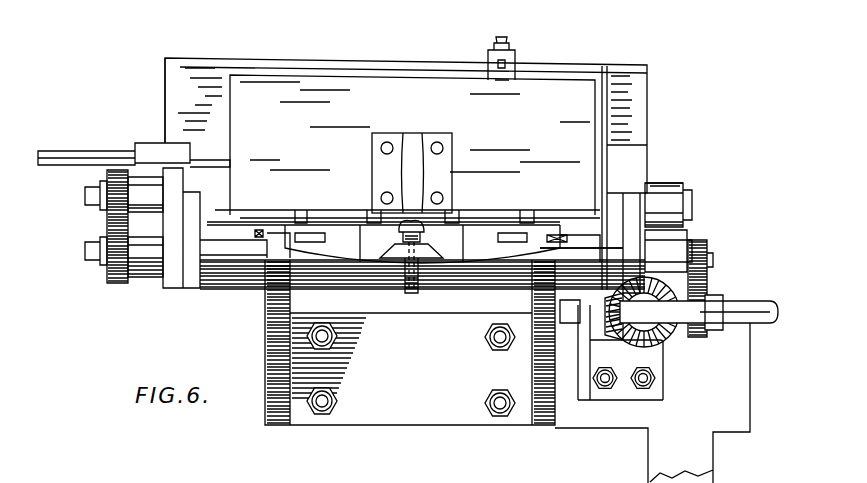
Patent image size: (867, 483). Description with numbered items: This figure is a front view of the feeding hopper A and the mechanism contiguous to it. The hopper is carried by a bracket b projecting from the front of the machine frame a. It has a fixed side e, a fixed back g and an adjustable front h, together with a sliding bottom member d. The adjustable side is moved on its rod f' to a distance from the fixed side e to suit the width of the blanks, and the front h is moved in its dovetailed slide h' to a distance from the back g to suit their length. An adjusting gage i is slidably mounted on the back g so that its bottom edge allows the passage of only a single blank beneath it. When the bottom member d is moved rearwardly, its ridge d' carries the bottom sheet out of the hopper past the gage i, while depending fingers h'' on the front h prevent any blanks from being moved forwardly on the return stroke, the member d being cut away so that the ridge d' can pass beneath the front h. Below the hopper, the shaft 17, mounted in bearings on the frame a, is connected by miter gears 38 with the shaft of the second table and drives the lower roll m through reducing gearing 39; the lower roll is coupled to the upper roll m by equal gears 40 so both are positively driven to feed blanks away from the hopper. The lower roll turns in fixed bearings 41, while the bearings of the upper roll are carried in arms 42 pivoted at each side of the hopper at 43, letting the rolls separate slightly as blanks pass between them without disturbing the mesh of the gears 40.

The tank A is at (406, 110).
The fixed back g is at (167, 75).
The adjustable front h is at (418, 157).
The fixed side e is at (610, 107).
The adjusting gage i is at (512, 72).
The dovetailed slide h' is at (401, 222).
The depending fingers h'' is at (407, 196).
The ridge d' is at (415, 207).
The sliding bottom member d is at (442, 268).
The roll m is at (236, 283).
The rod f' is at (134, 139).
The equal gears 40 is at (110, 236).
The pivot 43 is at (120, 202).
The fixed bearings 41 is at (145, 278).
The arms 42 is at (660, 183).
The reducing gearing 39 is at (700, 290).
The miter gears 38 is at (663, 343).
The shaft 17 is at (762, 305).
The machine frame a is at (750, 385).
The bracket b is at (393, 422).